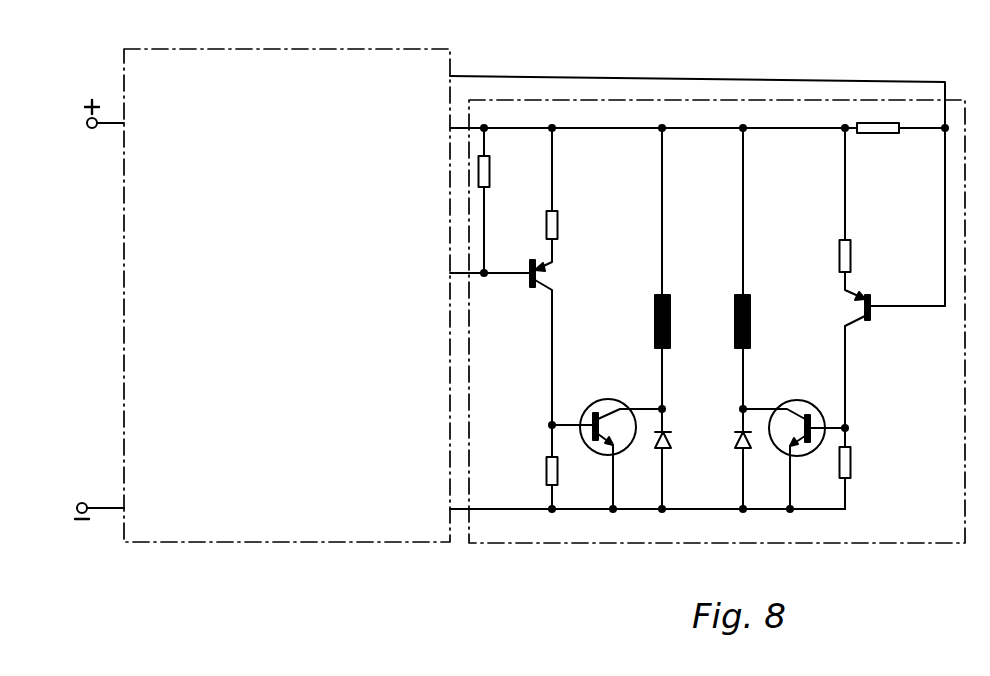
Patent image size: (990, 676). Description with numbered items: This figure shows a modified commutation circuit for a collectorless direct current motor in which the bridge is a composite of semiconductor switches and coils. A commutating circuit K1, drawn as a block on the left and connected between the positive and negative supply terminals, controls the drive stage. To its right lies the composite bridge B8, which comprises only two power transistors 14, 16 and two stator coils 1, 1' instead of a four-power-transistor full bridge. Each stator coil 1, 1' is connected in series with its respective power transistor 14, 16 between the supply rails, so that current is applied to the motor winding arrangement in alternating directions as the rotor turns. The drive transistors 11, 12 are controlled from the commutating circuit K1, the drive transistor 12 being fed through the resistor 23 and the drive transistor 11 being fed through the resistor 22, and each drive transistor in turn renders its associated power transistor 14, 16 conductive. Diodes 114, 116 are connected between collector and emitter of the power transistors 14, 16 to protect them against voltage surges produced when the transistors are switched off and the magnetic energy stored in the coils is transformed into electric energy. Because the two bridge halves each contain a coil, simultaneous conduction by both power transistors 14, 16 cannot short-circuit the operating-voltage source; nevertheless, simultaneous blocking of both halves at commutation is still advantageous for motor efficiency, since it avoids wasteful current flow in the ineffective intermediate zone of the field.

The commutating circuit K1 is at (318, 49).
The composite bridge B8 is at (718, 102).
The stator winding 1 is at (677, 268).
The stator coil 1' is at (759, 268).
The drive transistor 11 is at (874, 298).
The drive transistor 12 is at (529, 279).
The power transistor 14 is at (604, 407).
The power transistor 16 is at (797, 408).
The resistor 22 is at (893, 133).
The resistor 23 is at (486, 174).
The diode 114 is at (671, 440).
The diode 116 is at (735, 437).